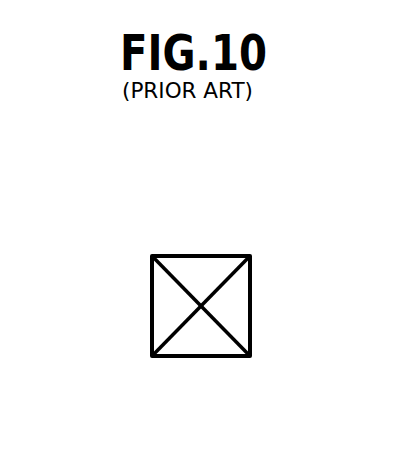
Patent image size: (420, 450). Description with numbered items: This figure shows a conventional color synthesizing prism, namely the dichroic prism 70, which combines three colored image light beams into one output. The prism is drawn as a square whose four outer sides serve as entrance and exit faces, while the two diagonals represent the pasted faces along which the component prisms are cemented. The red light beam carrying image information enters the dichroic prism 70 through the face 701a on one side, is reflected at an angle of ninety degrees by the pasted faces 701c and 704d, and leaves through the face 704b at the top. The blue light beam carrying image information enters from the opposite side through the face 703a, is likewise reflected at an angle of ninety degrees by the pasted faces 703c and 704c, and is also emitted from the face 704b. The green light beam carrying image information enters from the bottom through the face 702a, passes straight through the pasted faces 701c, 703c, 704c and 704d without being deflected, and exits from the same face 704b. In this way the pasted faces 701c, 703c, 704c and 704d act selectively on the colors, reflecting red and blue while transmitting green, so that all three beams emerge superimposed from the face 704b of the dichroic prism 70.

The dichroic prism 70 is at (280, 246).
The face 701a is at (245, 301).
The pasted face 701c is at (242, 336).
The face 702a is at (203, 357).
The face 703a is at (159, 297).
The pasted face 703c is at (166, 328).
The face 704b is at (188, 268).
The pasted face 704c is at (183, 280).
The pasted face 704d is at (228, 267).